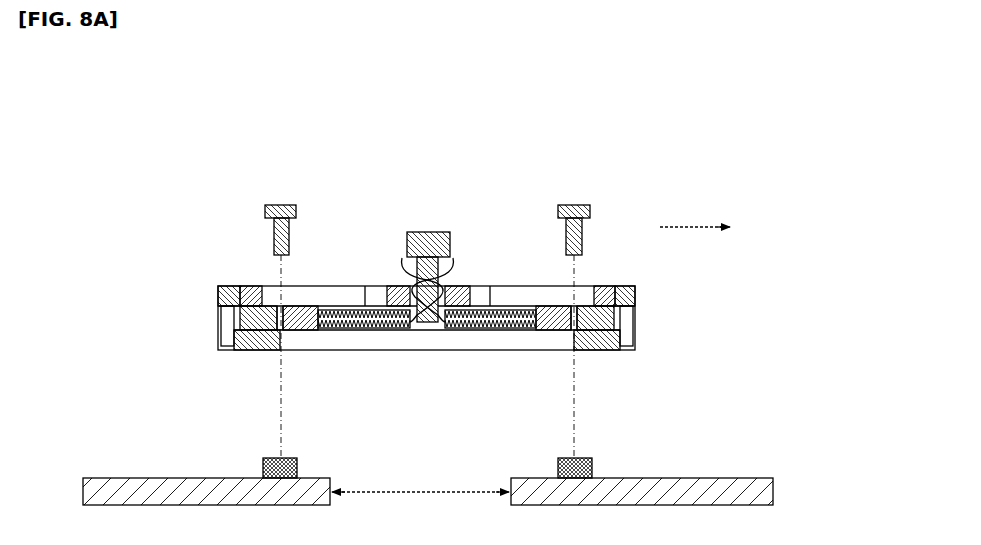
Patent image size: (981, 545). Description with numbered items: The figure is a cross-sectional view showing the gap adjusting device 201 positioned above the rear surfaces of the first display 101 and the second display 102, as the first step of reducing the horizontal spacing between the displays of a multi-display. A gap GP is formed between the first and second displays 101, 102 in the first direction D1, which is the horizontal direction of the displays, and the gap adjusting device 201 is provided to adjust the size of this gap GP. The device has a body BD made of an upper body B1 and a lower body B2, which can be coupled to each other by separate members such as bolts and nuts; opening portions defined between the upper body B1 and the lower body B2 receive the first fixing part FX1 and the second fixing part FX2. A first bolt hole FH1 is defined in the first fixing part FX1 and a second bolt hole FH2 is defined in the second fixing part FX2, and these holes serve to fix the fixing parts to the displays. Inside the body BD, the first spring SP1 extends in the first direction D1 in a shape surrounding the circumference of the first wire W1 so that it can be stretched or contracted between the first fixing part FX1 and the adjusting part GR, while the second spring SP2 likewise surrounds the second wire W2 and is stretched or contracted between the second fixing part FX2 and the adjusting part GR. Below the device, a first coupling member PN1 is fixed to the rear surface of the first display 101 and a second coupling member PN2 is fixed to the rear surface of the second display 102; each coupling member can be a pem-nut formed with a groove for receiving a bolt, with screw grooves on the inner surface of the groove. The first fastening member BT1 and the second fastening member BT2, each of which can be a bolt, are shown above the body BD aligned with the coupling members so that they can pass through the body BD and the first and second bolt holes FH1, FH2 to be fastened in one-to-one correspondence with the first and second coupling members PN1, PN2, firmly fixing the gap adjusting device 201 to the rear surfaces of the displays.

The gap adjusting device 201 is at (670, 146).
The body BD is at (710, 294).
The upper body B1 is at (635, 295).
The lower body B2 is at (635, 345).
The first fixing part FX1 is at (255, 286).
The second fixing part FX2 is at (610, 286).
The first bolt hole FH1 is at (284, 306).
The second bolt hole FH2 is at (571, 306).
The first fastening member BT1 is at (281, 205).
The second fastening member BT2 is at (574, 205).
The first spring SP1 is at (347, 350).
The second spring SP2 is at (483, 350).
The adjusting part GR is at (426, 232).
The first wire W1 is at (400, 262).
The second wire W2 is at (455, 262).
The first direction D1 is at (710, 228).
The first display 101 is at (115, 488).
The second display 102 is at (745, 488).
The first coupling member PN1 is at (262, 468).
The second coupling member PN2 is at (593, 468).
The gap GP is at (420, 481).